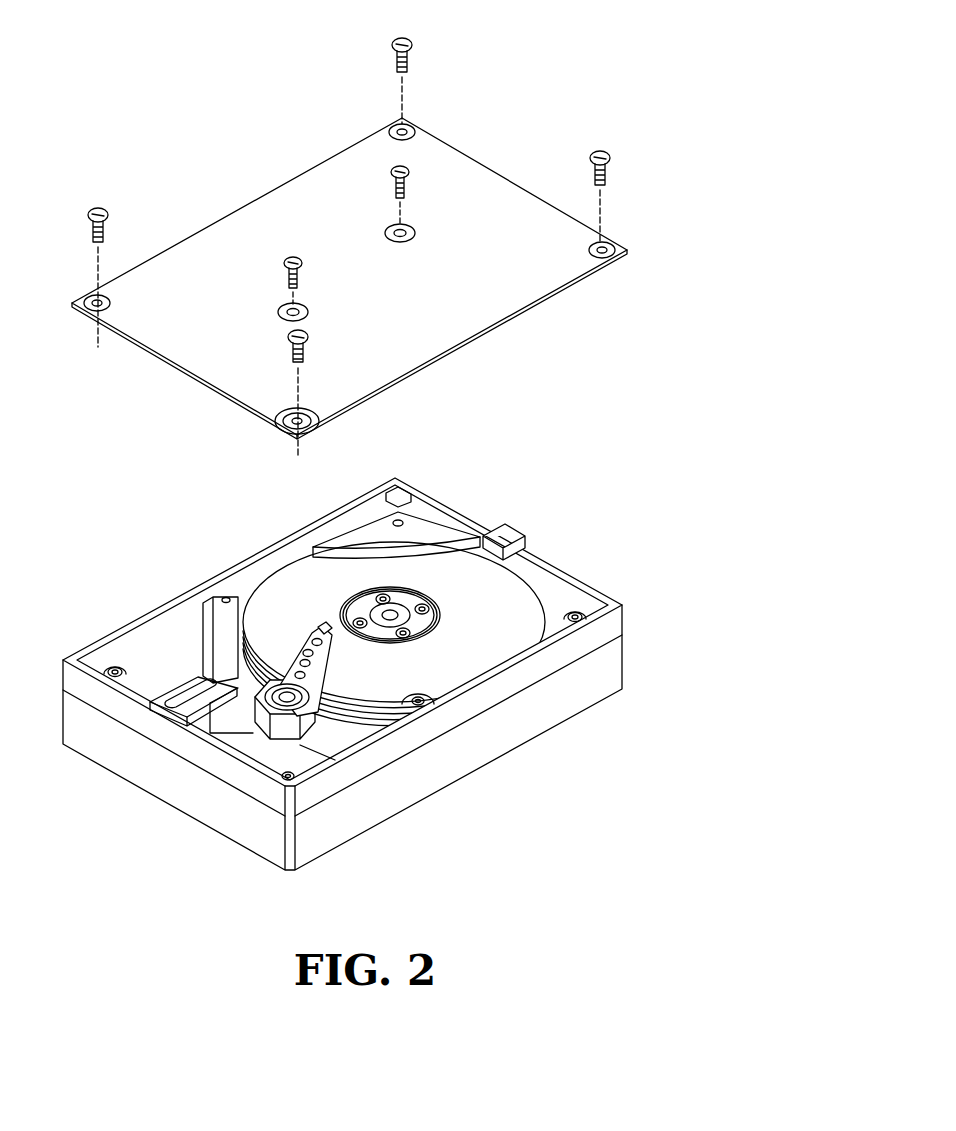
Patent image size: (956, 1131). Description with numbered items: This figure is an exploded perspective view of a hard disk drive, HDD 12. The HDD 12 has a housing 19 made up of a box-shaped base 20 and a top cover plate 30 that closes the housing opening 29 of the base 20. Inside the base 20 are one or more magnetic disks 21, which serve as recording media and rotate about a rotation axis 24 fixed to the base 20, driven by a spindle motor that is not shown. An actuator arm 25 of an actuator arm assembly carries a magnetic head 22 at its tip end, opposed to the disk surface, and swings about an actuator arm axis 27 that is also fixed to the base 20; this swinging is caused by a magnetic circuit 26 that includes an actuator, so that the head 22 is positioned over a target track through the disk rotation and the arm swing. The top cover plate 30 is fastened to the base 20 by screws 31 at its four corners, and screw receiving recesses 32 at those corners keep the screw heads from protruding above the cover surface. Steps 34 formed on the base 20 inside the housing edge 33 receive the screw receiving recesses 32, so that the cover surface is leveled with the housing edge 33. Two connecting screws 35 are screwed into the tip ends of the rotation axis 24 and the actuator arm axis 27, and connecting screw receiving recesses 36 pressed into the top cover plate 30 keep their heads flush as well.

The HDD 12 is at (572, 116).
The housing 19 is at (558, 343).
The base 20 is at (510, 530).
The magnetic disk 21 is at (405, 715).
The magnetic head 22 is at (320, 628).
The rotation axis 24 is at (392, 612).
The actuator arm 25 is at (318, 672).
The magnetic circuit 26 is at (360, 742).
The actuator arm axis 27 is at (283, 690).
The housing opening 29 is at (170, 638).
The top cover plate 30 is at (528, 310).
The screw 31 is at (412, 46).
The screw receiving recess 32 is at (415, 127).
The housing edge 33 is at (522, 660).
The step 34 is at (415, 530).
The connecting screw 35 is at (392, 183).
The connecting screw receiving recess 36 is at (414, 233).